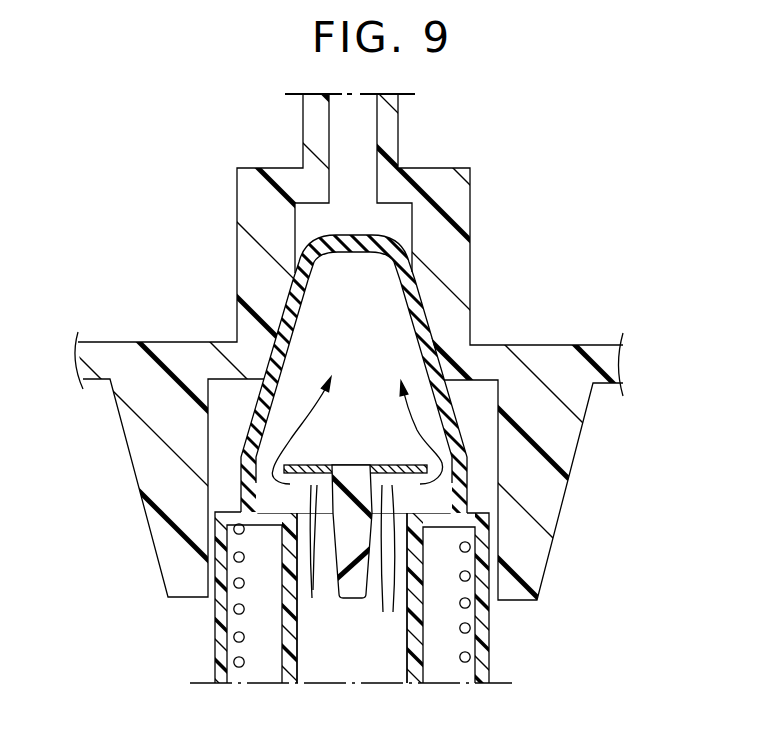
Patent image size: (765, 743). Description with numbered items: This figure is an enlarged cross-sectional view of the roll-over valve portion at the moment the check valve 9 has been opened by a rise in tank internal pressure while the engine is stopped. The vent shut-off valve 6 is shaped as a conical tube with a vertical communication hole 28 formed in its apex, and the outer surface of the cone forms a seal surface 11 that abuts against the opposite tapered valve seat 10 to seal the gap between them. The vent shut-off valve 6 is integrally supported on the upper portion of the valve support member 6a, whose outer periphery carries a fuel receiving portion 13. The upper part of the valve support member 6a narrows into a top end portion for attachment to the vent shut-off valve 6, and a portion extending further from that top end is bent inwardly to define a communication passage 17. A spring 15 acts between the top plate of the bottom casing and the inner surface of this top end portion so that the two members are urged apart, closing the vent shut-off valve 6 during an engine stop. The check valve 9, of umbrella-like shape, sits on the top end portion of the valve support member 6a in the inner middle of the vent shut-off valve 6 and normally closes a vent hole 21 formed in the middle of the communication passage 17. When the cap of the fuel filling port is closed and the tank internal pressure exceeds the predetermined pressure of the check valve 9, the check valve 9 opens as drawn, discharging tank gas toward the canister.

The vent shut-off valve 6 is at (447, 406).
The valve support member 6a is at (490, 663).
The check valve 9 is at (362, 464).
The tapered valve seat 10 is at (421, 322).
The seal surface 11 is at (273, 333).
The fuel receiving portion 13 is at (354, 203).
The spring 15 is at (470, 628).
The communication passage 17 is at (343, 660).
The vent hole 21 is at (386, 596).
The vertical communication hole 28 is at (357, 237).